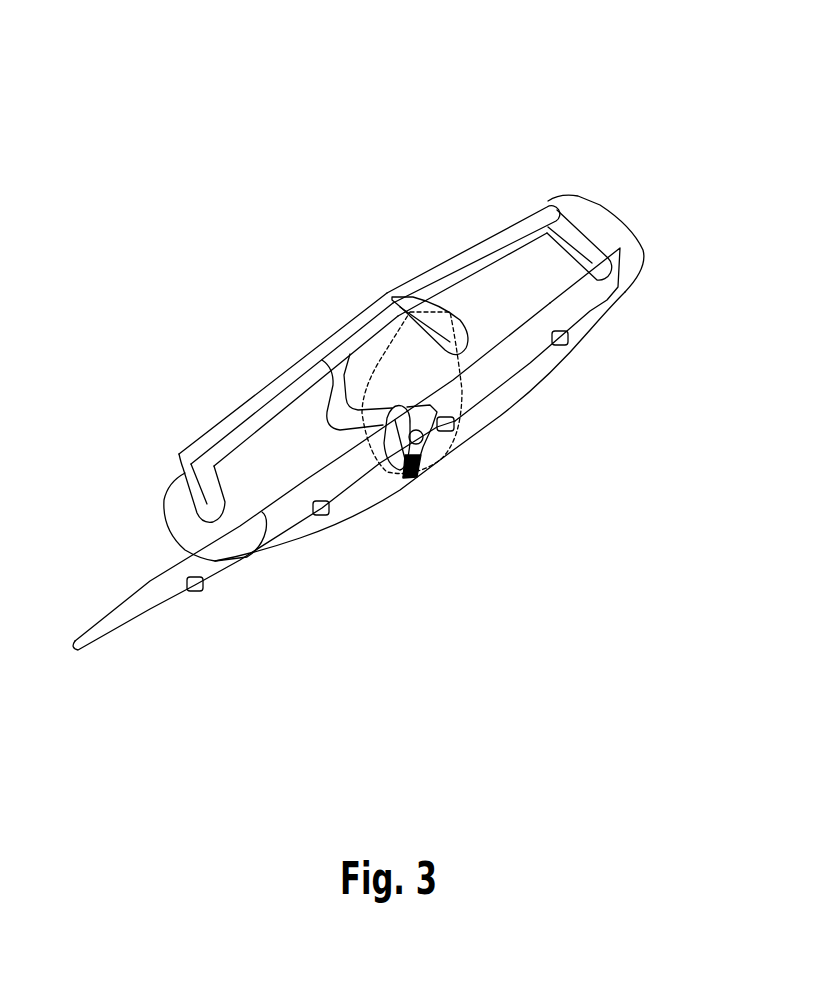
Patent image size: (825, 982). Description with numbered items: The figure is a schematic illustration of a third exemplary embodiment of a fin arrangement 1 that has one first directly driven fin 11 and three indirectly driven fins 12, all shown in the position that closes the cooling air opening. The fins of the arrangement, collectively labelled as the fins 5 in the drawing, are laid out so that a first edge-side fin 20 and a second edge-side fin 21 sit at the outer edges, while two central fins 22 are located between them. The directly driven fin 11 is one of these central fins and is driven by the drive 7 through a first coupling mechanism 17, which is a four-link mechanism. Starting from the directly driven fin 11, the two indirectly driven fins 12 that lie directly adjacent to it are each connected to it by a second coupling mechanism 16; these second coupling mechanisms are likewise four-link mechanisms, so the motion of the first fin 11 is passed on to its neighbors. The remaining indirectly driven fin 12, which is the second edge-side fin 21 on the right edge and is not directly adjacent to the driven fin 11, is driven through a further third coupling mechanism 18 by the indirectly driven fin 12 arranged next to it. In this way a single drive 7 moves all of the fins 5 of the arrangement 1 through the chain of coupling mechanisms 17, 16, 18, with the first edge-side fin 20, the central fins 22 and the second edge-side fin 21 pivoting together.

The fin arrangement 1 is at (575, 132).
The support body 5 is at (421, 479).
The drive 7 is at (421, 450).
The first directly driven fin 11 is at (357, 462).
The indirectly driven fin 12 is at (421, 479).
The second coupling mechanism 16 is at (357, 323).
The first coupling mechanism 17 is at (410, 477).
The third coupling mechanism 18 is at (477, 246).
The first edge-side fin 20 is at (143, 600).
The second edge-side fin 21 is at (572, 316).
The central fin 22 is at (512, 350).